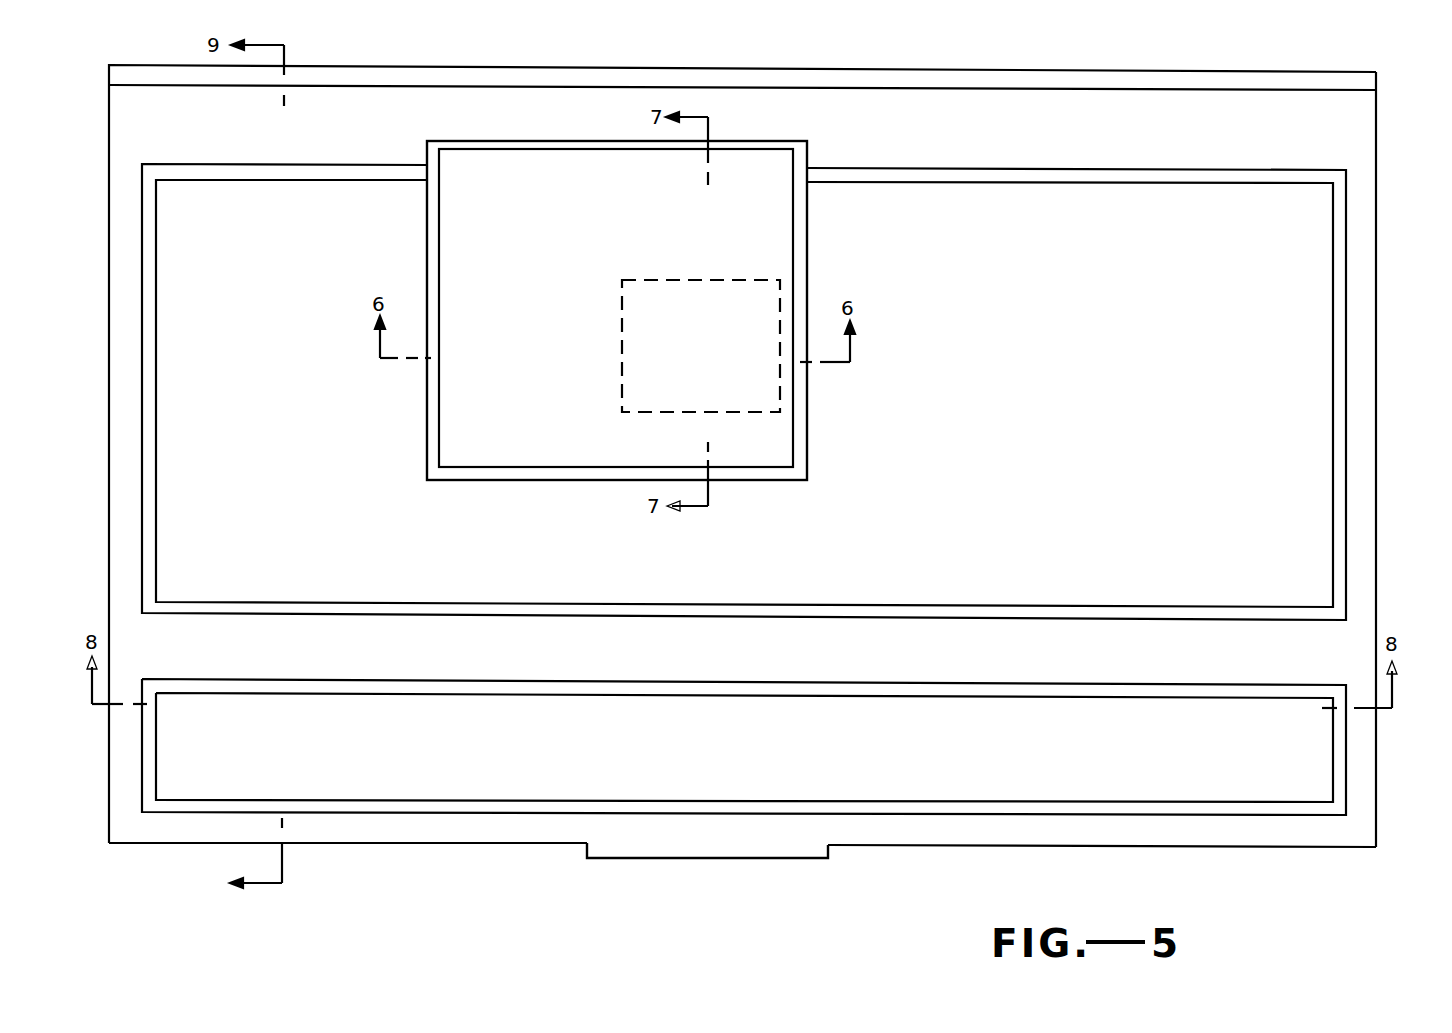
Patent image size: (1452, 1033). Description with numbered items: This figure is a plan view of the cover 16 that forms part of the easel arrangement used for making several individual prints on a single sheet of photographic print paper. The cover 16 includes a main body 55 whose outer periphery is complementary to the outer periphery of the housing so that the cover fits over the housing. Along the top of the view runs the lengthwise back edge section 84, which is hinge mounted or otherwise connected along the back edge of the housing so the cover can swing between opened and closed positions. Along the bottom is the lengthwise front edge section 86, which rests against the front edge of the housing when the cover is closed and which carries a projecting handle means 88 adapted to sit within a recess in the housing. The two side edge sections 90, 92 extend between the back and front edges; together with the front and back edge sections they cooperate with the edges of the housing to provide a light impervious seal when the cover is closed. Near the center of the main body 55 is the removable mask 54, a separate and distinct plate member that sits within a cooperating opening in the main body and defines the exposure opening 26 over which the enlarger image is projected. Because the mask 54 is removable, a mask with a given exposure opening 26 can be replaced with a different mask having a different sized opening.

The cover 16 is at (135, 868).
The exposure opening 26 is at (740, 327).
The mask 54 is at (539, 430).
The main body 55 is at (122, 345).
The back edge section 84 is at (412, 80).
The front edge section 86 is at (435, 833).
The handle means 88 is at (680, 852).
The side edge section 90 is at (122, 453).
The side edge section 92 is at (1366, 372).